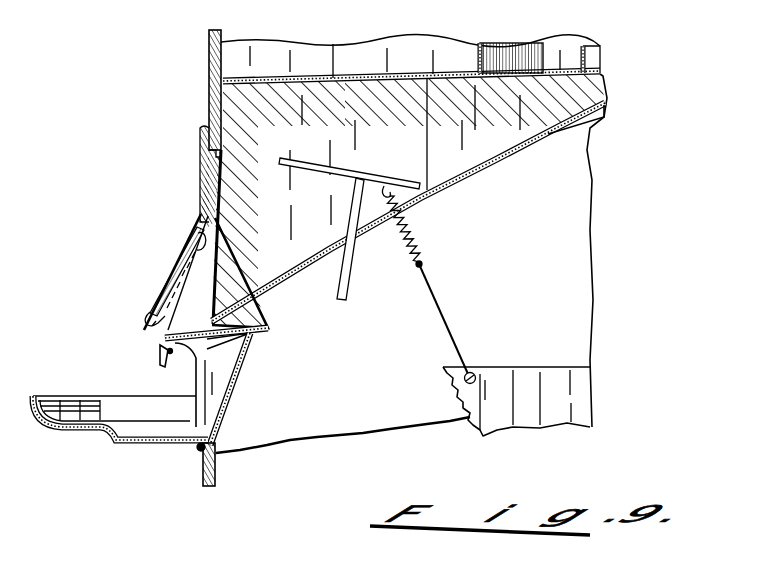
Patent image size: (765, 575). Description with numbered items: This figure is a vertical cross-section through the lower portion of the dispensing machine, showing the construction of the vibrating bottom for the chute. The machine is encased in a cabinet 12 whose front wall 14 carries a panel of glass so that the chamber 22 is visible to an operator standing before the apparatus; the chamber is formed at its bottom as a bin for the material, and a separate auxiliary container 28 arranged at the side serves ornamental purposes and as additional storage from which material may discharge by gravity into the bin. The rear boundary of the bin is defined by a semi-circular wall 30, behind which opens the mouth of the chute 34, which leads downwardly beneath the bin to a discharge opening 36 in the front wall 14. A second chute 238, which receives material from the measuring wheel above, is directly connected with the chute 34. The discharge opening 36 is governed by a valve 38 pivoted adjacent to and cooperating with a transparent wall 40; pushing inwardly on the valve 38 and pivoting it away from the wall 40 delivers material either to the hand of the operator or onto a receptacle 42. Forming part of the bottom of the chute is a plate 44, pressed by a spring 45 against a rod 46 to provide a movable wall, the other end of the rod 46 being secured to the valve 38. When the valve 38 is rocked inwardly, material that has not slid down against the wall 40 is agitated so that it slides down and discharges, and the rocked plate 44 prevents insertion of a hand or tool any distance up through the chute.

The cabinet 12 is at (207, 47).
The front wall 14 is at (212, 79).
The chamber 22 is at (347, 54).
The auxiliary container 28 is at (600, 52).
The semi-circular wall 30 is at (508, 56).
The chute 238 is at (596, 117).
The chute 34 is at (494, 162).
The discharge opening 36 is at (209, 253).
The valve 38 is at (161, 346).
The transparent wall 40 is at (177, 266).
The receptacle 42 is at (120, 414).
The plate 44 is at (323, 170).
The spring 45 is at (418, 237).
The rod 46 is at (340, 267).